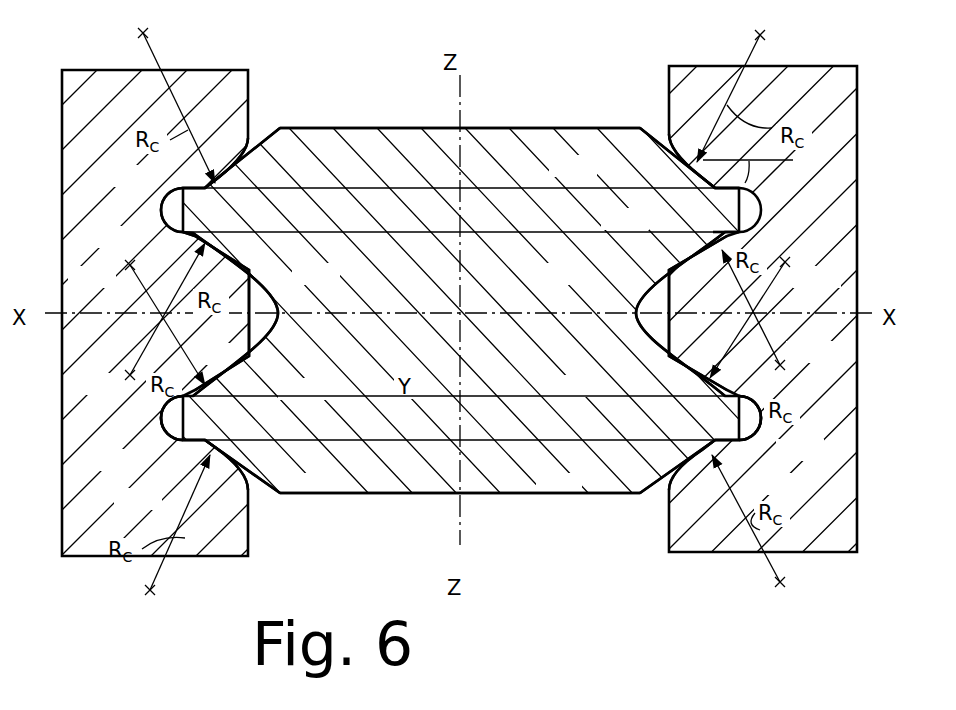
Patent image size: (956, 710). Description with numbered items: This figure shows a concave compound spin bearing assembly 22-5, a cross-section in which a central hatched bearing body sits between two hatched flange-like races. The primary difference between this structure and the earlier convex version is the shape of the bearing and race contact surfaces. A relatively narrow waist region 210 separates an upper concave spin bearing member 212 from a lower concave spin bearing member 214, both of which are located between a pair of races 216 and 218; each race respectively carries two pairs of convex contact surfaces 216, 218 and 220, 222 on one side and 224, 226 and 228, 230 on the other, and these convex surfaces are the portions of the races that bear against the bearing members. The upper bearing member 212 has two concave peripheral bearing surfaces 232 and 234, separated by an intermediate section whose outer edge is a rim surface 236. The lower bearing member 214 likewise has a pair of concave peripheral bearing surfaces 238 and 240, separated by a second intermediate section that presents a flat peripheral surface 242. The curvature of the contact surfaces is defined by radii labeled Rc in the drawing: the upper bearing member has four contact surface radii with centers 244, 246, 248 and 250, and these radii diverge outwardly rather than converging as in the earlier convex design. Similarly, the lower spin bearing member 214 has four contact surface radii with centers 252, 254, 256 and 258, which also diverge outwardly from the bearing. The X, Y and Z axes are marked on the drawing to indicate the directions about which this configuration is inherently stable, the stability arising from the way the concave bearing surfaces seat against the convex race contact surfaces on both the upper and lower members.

The concave compound spin bearing assembly 22-5 is at (498, 103).
The waist region 210 is at (645, 300).
The upper concave spin bearing member 212 is at (372, 130).
The lower concave spin bearing member 214 is at (388, 495).
The race / convex contact surface 216 is at (200, 186).
The race / convex contact surface 218 is at (193, 243).
The convex contact surface 220 is at (220, 313).
The convex contact surface 222 is at (190, 450).
The convex contact surface 224 is at (459, 311).
The convex contact surface 226 is at (735, 234).
The convex contact surface 228 is at (740, 385).
The convex contact surface 230 is at (733, 448).
The concave peripheral bearing surface 232 is at (268, 135).
The concave peripheral bearing surface 234 is at (262, 283).
The rim surface 236 is at (735, 207).
The concave peripheral bearing surface 238 is at (253, 368).
The concave peripheral bearing surface 240 is at (272, 470).
The flat peripheral surface 242 is at (185, 443).
The contact surface radius center 244 is at (147, 36).
The contact surface radius center 246 is at (130, 375).
The contact surface radius center 248 is at (764, 38).
The contact surface radius center 250 is at (783, 368).
The contact surface radius center 252 is at (130, 265).
The contact surface radius center 254 is at (153, 594).
The contact surface radius center 256 is at (788, 265).
The contact surface radius center 258 is at (784, 586).